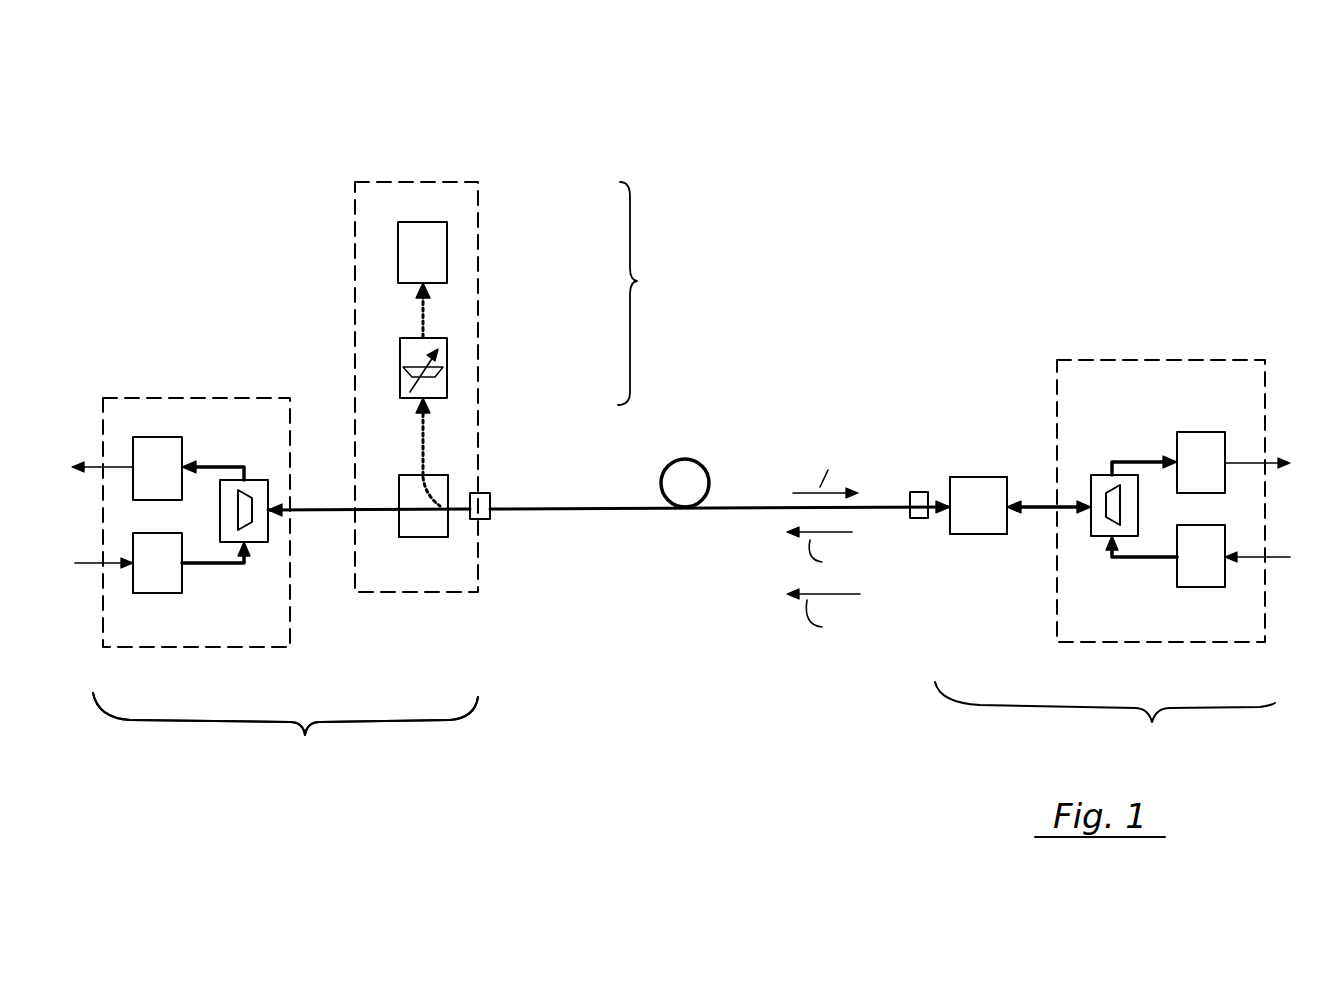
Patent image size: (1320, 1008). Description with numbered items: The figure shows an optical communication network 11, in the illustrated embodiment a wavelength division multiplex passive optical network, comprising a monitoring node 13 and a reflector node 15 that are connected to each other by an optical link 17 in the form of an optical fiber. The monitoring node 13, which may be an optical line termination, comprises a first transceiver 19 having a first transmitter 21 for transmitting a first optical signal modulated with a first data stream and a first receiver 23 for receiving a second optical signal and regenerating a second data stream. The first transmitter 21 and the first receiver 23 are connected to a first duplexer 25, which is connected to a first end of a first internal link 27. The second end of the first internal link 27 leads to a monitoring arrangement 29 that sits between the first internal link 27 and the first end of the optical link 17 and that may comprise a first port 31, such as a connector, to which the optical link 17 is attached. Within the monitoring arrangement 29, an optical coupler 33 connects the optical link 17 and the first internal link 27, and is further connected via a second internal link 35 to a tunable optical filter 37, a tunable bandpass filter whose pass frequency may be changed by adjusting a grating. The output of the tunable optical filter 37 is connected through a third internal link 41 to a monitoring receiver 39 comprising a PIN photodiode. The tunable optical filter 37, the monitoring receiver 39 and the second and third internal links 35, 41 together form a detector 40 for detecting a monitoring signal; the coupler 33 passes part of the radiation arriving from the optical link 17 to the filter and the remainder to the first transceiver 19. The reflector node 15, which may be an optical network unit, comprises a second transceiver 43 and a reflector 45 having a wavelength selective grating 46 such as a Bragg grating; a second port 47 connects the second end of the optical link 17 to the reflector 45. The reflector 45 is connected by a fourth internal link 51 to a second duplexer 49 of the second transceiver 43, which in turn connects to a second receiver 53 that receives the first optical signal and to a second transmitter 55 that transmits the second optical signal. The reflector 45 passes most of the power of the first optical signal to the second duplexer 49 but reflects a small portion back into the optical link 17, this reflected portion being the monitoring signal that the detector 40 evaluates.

The optical communication network 11 is at (172, 142).
The monitoring node 13 is at (285, 739).
The reflector node 15 is at (1105, 722).
The optical link 17 is at (752, 507).
The first transceiver 19 is at (148, 398).
The first transmitter 21 is at (165, 593).
The first receiver 23 is at (140, 437).
The first duplexer 25 is at (255, 480).
The first internal link 27 is at (300, 510).
The monitoring arrangement 29 is at (455, 182).
The first port 31 is at (483, 493).
The optical coupler 33 is at (405, 537).
The second internal link 35 is at (425, 432).
The tunable optical filter 37 is at (447, 355).
The monitoring receiver 39 is at (447, 250).
The detector 40 is at (653, 293).
The third internal link 41 is at (418, 312).
The second transceiver 43 is at (1135, 360).
The reflector 45 is at (1017, 386).
The wavelength selective grating 46 is at (970, 477).
The second port 47 is at (920, 492).
The second duplexer 49 is at (1093, 478).
The fourth internal link 51 is at (1038, 508).
The second receiver 53 is at (1190, 432).
The second transmitter 55 is at (1190, 587).